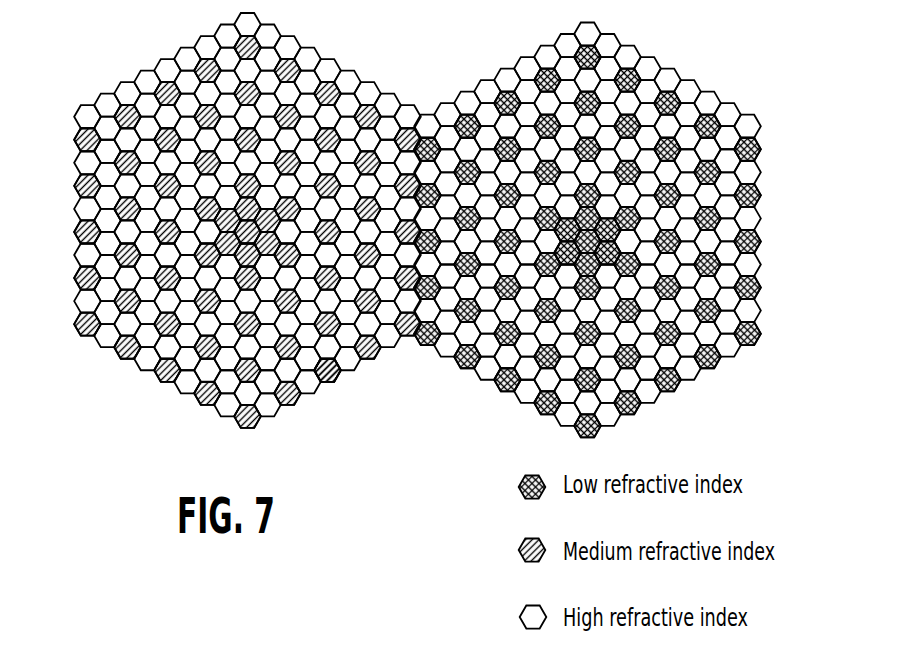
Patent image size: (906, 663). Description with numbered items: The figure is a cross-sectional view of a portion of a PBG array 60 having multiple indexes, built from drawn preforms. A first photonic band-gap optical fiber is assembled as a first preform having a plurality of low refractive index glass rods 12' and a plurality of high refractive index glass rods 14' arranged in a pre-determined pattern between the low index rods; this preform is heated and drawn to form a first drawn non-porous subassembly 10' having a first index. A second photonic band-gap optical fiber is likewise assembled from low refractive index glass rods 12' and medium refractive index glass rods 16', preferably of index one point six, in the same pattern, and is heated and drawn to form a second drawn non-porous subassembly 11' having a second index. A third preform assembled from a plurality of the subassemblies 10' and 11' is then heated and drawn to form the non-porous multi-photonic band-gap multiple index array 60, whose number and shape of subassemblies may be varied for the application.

The PBG array 60 is at (232, 231).
The second drawn non-porous subassembly 11' is at (357, 404).
The first drawn non-porous subassembly 10' is at (587, 240).
The low refractive index glass rods 12' is at (487, 491).
The medium refractive index glass rods 16' is at (489, 558).
The high refractive index glass rods 14' is at (490, 624).